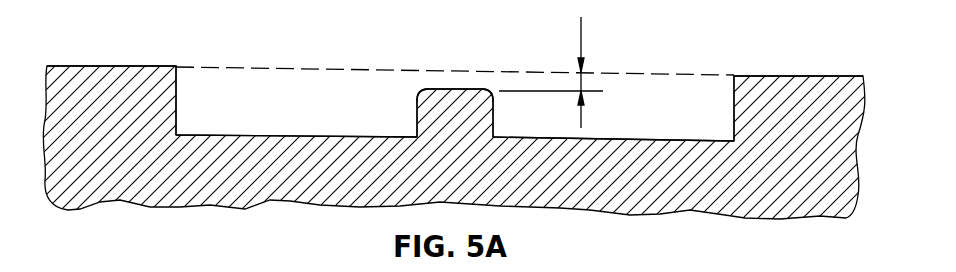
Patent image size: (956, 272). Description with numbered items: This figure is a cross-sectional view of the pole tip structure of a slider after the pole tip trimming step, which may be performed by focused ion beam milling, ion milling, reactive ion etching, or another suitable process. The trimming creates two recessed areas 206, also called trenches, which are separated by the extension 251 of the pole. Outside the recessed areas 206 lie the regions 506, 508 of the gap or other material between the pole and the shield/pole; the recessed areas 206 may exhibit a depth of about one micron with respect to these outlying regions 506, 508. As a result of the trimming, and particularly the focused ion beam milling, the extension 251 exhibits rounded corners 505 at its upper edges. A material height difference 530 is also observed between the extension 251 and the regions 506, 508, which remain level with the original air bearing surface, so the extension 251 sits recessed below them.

The region 506 is at (113, 66).
The region 508 is at (815, 76).
The recessed area 206 is at (256, 83).
The rounded corner 505 is at (424, 89).
The extension 251 is at (438, 127).
The material height difference 530 is at (581, 34).